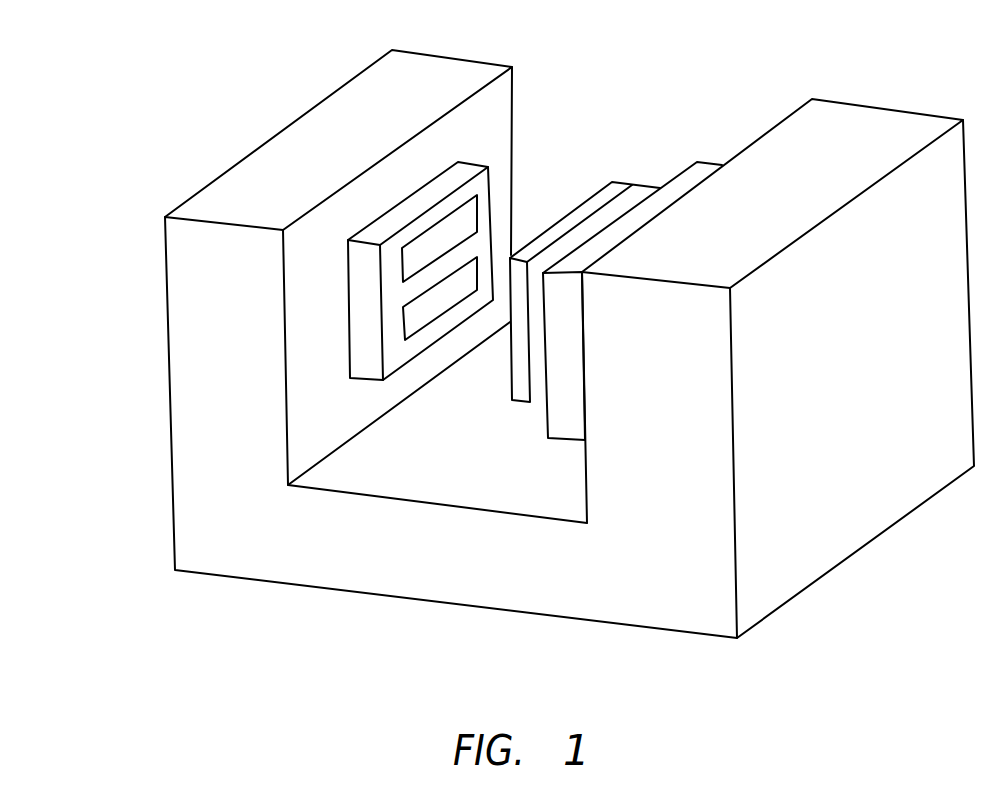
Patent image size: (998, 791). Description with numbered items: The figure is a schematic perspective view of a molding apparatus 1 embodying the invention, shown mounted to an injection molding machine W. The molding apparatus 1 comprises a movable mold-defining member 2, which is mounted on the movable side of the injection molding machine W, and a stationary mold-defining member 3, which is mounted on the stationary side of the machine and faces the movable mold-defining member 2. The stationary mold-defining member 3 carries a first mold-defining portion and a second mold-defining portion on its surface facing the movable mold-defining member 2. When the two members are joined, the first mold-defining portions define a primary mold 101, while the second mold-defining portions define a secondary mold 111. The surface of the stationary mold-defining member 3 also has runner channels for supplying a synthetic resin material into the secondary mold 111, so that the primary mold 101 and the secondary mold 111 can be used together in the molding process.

The molding apparatus 1 is at (609, 93).
The movable mold-defining member 2 is at (643, 183).
The stationary mold-defining member 3 is at (275, 290).
The injection molding machine W is at (503, 590).
The primary mold 101 is at (410, 318).
The secondary mold 111 is at (410, 253).